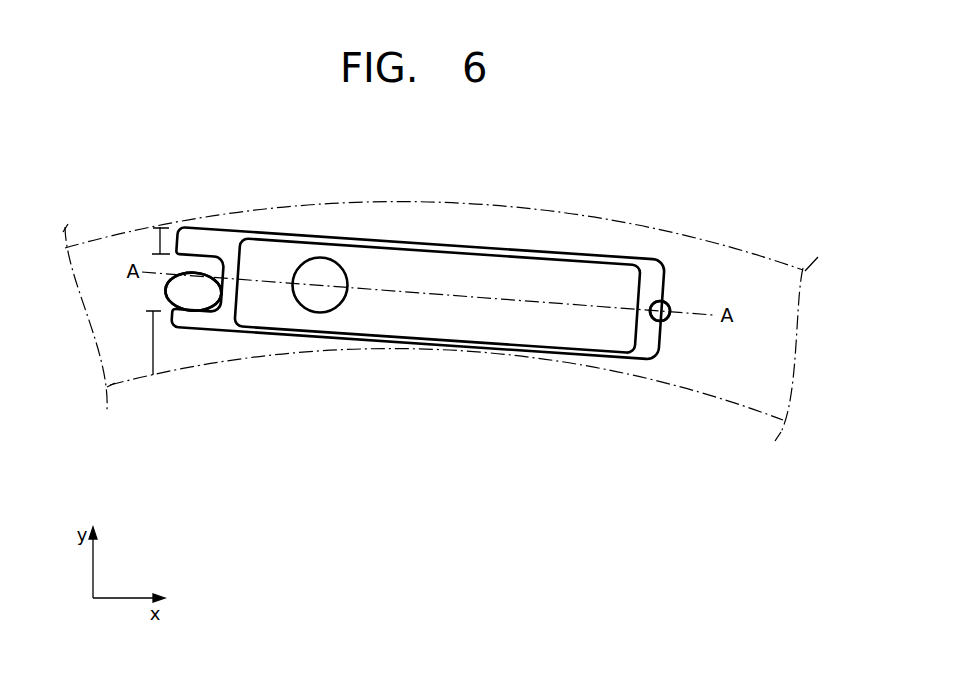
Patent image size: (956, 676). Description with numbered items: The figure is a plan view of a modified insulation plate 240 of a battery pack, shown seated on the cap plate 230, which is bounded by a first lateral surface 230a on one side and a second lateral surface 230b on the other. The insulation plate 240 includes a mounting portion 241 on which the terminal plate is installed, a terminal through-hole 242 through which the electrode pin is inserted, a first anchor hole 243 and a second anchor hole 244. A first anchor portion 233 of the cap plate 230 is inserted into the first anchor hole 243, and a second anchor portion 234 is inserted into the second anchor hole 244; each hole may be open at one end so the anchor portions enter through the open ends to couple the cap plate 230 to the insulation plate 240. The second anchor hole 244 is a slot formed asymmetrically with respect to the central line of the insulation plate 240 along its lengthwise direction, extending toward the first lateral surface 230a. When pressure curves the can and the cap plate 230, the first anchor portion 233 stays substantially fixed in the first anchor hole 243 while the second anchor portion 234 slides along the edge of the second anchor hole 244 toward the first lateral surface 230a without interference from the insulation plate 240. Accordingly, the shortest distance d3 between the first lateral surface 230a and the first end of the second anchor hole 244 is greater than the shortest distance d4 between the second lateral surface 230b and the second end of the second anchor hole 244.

The cap plate 230 is at (450, 203).
The first lateral surface 230a is at (181, 372).
The second lateral surface 230b is at (195, 221).
The first anchor portion 233 is at (668, 320).
The second anchor portion 234 is at (200, 285).
The insulation plate 240 is at (447, 283).
The mounting portion 241 is at (492, 330).
The opening 242 is at (322, 302).
The first anchor hole 243 is at (651, 302).
The second anchor hole 244 is at (203, 312).
The shortest distance between first lateral surface and first end of second anchor h d3 is at (153, 348).
The shortest distance between second lateral surface and second end of second anchor d4 is at (159, 246).